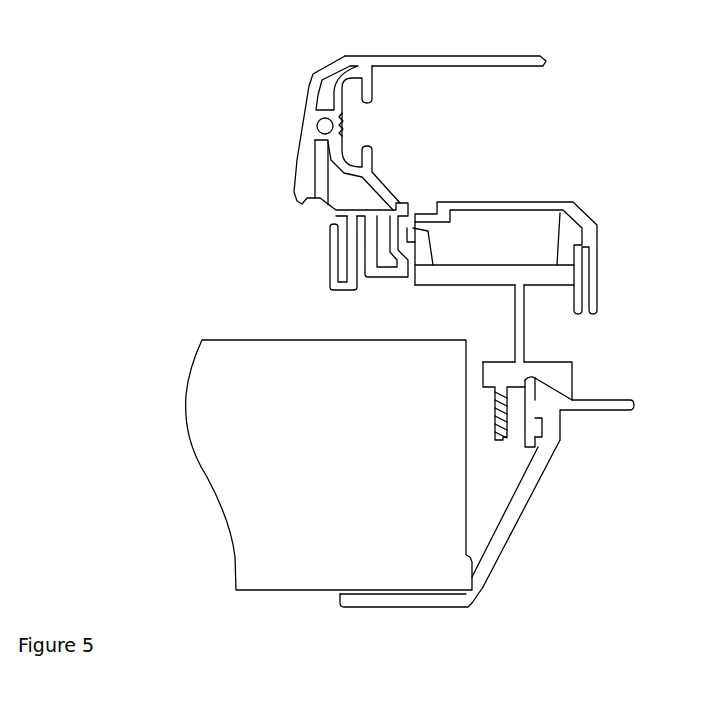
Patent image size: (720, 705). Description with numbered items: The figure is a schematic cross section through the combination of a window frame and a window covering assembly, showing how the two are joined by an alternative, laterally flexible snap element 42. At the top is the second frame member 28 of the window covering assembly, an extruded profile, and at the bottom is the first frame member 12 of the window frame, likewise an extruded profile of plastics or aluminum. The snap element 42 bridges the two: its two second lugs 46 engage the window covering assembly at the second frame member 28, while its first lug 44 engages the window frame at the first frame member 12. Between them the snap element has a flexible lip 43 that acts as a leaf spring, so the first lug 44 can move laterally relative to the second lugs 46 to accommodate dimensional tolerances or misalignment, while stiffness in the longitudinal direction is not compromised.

The second frame member 28 is at (514, 60).
The second lugs 46 is at (431, 236).
The flexible lip 43 is at (523, 337).
The snap element 42 is at (588, 375).
The first lug 44 is at (517, 430).
The first frame member 12 is at (480, 590).